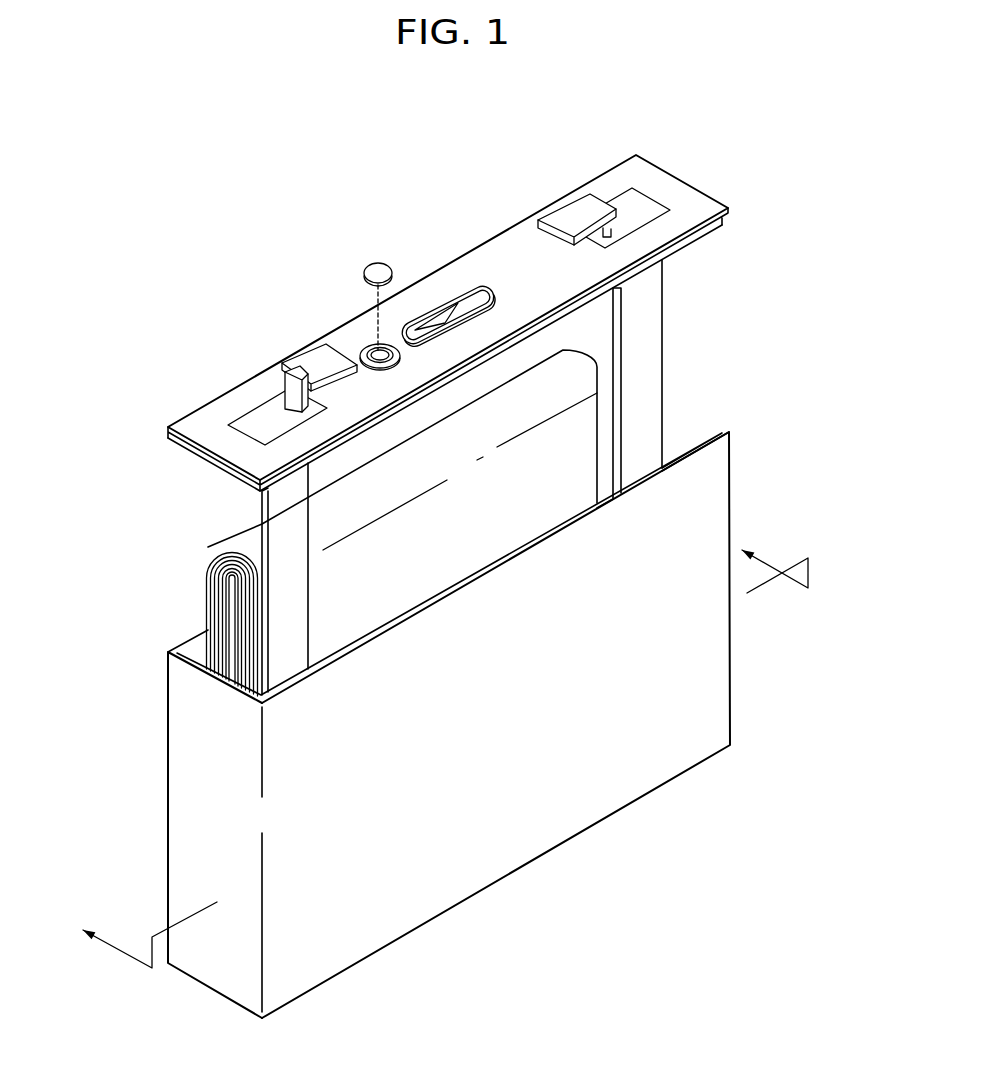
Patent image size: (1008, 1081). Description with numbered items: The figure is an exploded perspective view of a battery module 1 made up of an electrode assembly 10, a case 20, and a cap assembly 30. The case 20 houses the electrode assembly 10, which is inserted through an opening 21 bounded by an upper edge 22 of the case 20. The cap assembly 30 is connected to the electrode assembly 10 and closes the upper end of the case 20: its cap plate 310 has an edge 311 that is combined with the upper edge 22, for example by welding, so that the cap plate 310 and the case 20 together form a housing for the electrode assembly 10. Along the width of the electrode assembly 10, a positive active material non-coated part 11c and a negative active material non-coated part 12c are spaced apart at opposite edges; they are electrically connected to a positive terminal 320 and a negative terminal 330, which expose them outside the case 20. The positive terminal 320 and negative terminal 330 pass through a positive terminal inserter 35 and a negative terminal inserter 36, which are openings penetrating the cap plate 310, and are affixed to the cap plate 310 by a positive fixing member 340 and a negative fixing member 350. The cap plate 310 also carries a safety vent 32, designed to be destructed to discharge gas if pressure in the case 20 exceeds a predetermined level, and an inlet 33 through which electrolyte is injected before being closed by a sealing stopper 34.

The battery module 1 is at (762, 192).
The electrode assembly 10 is at (458, 552).
The positive active material non-coated part 11c is at (312, 628).
The negative active material non-coated part 12c is at (607, 462).
The case 20 is at (731, 716).
The opening 21 is at (682, 428).
The upper edge 22 is at (190, 636).
The cap assembly 30 is at (472, 276).
The cap plate 310 is at (205, 412).
The edge 311 is at (168, 436).
The safety vent 32 is at (445, 322).
The inlet 33 is at (372, 352).
The sealing stopper 34 is at (377, 263).
The positive terminal inserter 35 is at (230, 448).
The negative terminal inserter 36 is at (652, 196).
The positive terminal 320 is at (306, 358).
The negative terminal 330 is at (557, 210).
The positive fixing member 340 is at (252, 417).
The negative fixing member 350 is at (623, 205).